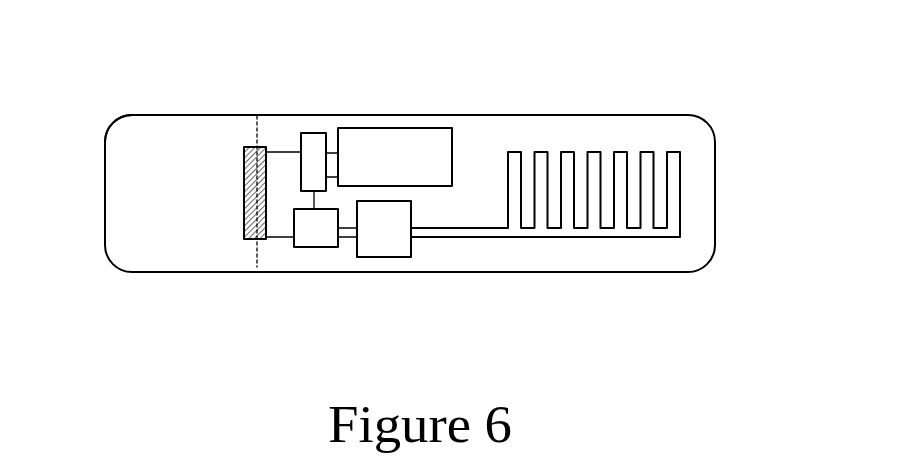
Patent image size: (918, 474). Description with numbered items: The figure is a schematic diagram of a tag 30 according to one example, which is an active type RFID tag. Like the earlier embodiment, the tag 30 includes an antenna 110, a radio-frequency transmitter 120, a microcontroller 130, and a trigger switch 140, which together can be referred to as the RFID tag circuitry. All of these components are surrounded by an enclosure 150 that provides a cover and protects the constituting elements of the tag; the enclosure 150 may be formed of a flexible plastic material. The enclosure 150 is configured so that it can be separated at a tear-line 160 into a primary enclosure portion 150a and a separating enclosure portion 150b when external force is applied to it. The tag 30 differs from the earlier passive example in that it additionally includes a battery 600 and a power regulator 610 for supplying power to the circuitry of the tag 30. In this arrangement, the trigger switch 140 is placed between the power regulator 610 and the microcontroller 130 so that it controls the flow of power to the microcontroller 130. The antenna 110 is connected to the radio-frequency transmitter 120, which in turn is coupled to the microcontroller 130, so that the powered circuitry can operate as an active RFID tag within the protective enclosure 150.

The tag 30 is at (560, 83).
The antenna 110 is at (682, 177).
The radio-frequency transmitter 120 is at (382, 258).
The microcontroller 130 is at (315, 249).
The trigger switch 140 is at (243, 115).
The enclosure 150 is at (513, 272).
The primary enclosure portion 150a is at (348, 115).
The separating enclosure portion 150b is at (127, 116).
The tear-line 160 is at (250, 255).
The battery 600 is at (395, 128).
The power regulator 610 is at (312, 132).